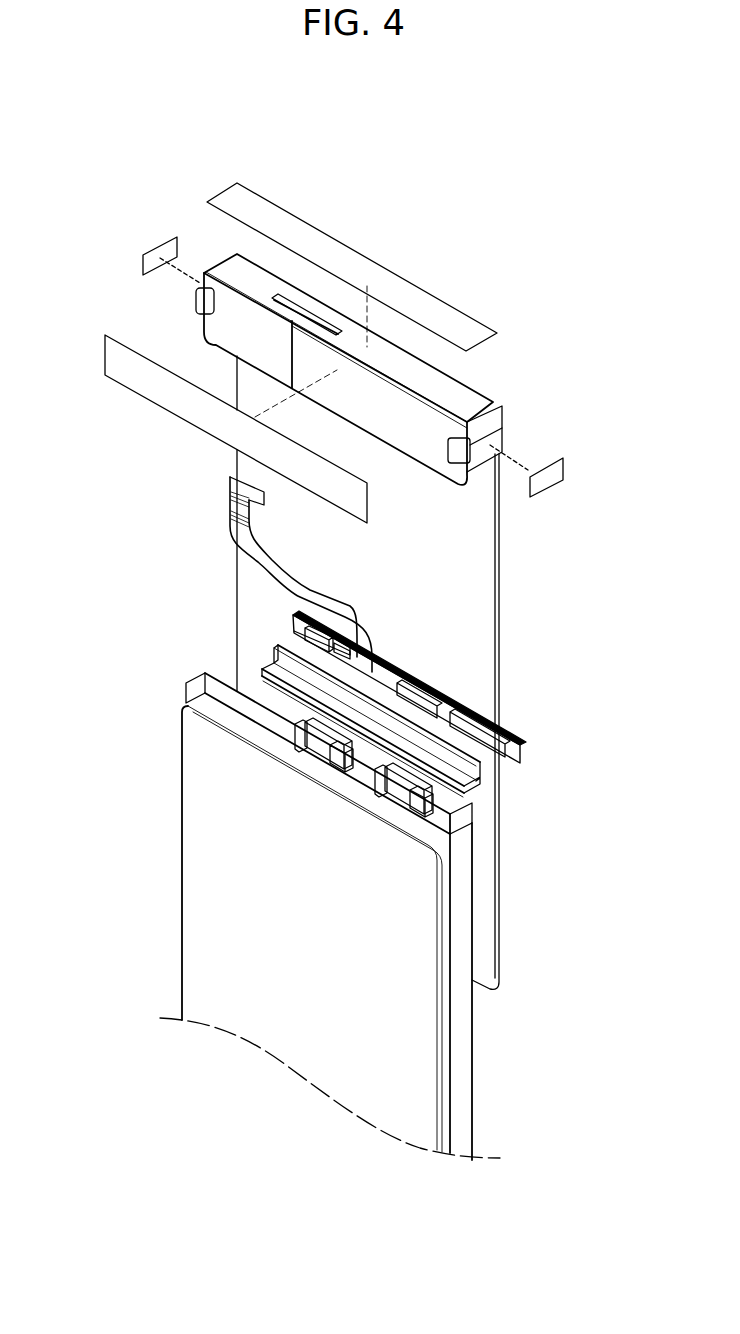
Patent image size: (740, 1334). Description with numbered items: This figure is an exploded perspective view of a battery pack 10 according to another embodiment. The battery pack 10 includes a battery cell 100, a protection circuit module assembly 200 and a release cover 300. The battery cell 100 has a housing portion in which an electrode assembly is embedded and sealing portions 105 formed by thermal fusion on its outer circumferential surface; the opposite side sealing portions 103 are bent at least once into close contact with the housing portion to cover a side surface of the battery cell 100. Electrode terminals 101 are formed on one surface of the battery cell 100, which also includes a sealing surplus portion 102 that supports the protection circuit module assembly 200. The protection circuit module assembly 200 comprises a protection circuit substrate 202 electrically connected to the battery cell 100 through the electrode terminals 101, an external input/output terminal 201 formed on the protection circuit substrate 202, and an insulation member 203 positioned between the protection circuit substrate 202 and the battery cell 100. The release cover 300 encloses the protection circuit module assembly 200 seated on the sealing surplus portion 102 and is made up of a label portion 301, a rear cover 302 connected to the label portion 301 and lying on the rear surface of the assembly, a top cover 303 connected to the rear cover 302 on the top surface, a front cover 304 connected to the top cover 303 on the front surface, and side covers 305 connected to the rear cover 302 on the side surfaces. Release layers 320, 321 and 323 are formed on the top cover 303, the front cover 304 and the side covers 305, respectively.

The battery pack 10 is at (90, 114).
The battery cell 100 is at (329, 916).
The electrode terminals 101 is at (317, 748).
The sealing surplus portion 102 is at (237, 718).
The opposite side sealing portions 103 is at (463, 1086).
The sealing portions 105 is at (457, 817).
The protection circuit module assembly 200 is at (300, 637).
The external input/output terminal 201 is at (254, 551).
The protection circuit substrate 202 is at (297, 622).
The insulation member 203 is at (280, 663).
The release cover 300 is at (340, 594).
The label portion 301 is at (470, 627).
The rear cover 302 is at (482, 508).
The top cover 303 is at (418, 380).
The front cover 304 is at (380, 395).
The side covers 305 is at (198, 285).
The release layer 320 is at (280, 207).
The release layer 321 is at (148, 384).
The release layer 323 is at (157, 247).